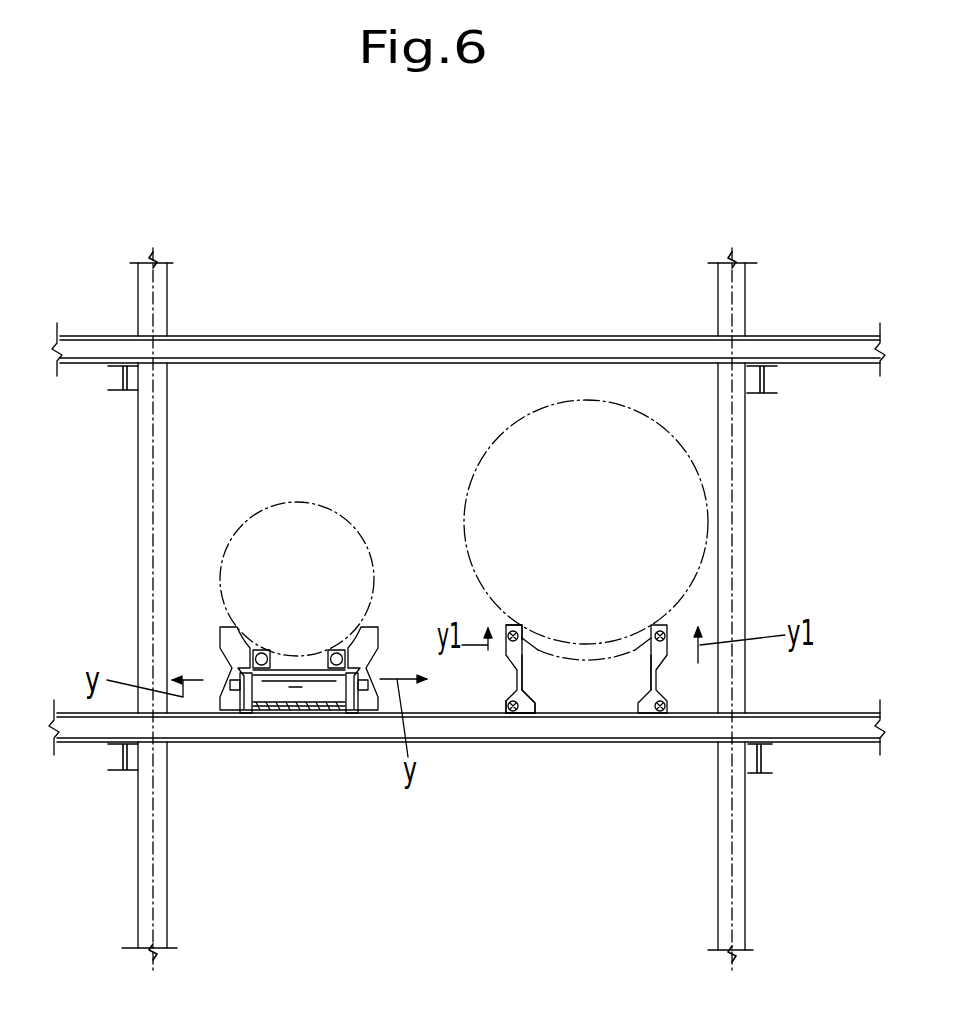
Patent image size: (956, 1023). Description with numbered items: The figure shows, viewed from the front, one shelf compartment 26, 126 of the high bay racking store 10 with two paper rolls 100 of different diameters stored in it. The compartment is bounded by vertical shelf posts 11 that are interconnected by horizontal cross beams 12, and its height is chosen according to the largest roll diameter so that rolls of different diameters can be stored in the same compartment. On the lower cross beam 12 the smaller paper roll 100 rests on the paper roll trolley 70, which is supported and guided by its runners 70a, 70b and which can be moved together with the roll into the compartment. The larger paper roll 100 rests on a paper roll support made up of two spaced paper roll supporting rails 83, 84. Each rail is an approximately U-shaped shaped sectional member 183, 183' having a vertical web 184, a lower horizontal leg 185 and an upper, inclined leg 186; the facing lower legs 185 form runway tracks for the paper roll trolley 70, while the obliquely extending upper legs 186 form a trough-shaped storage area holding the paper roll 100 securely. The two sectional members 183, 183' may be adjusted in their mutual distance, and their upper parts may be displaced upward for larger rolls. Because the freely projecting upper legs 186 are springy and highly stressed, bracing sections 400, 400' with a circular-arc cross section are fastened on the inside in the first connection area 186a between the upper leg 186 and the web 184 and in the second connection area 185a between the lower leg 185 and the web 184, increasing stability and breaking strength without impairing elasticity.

The high bay racking store 10 is at (540, 288).
The vertical shelf posts 11 is at (150, 875).
The horizontal cross beams 12 is at (243, 333).
The shelf compartment 26 is at (298, 621).
The shelf compartment 126 is at (298, 621).
The paper roll 100 is at (252, 518).
The paper roll trolley 70 is at (297, 693).
The runner 70a is at (243, 713).
The runner 70b is at (355, 713).
The shaped sectional member 183 is at (298, 660).
The shaped sectional member 183' is at (386, 633).
The upper inclined leg 186 is at (522, 630).
The first connection area 186a is at (525, 628).
The bracing section 400 is at (731, 623).
The bracing section 400' is at (673, 768).
The paper roll supporting rail 84 is at (650, 657).
The paper roll supporting rail 83 is at (520, 655).
The vertical web 184 is at (537, 700).
The lower horizontal leg 185 is at (524, 713).
The second connection area 185a is at (509, 714).